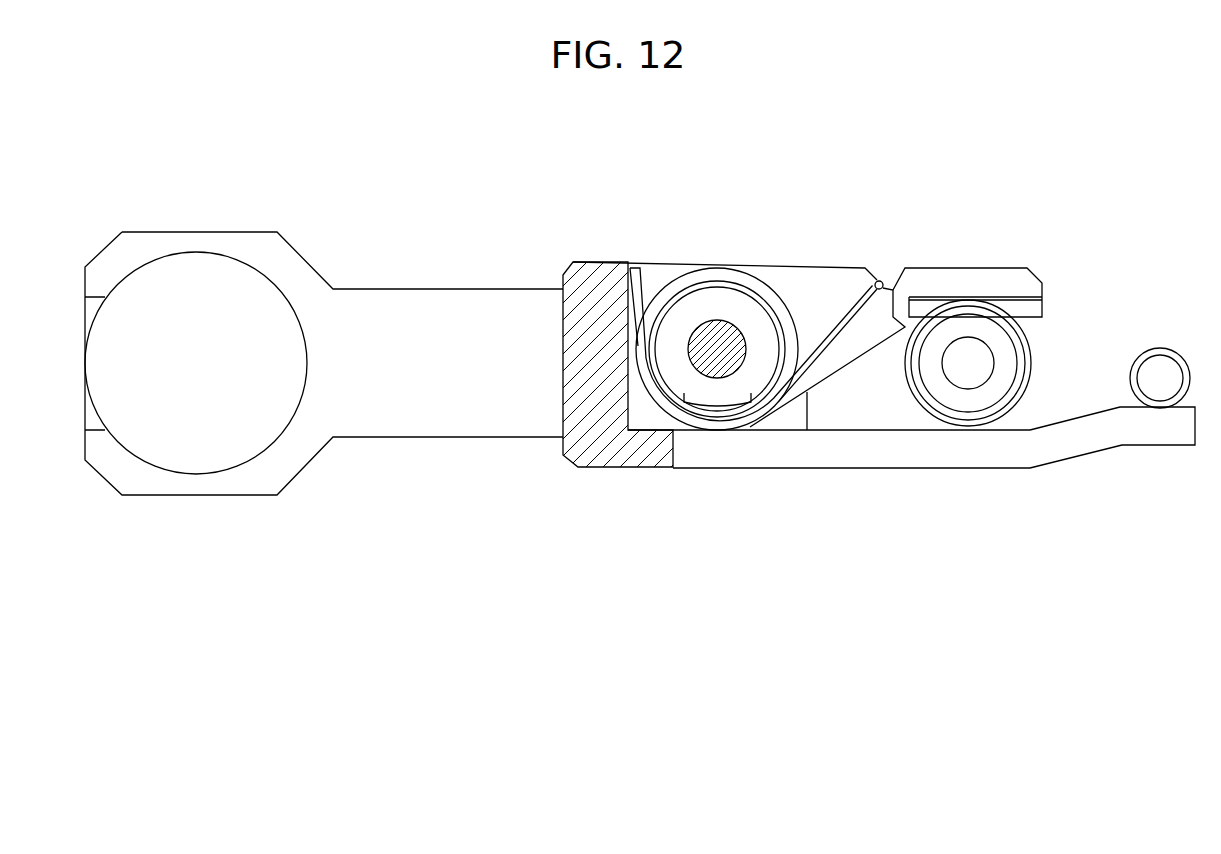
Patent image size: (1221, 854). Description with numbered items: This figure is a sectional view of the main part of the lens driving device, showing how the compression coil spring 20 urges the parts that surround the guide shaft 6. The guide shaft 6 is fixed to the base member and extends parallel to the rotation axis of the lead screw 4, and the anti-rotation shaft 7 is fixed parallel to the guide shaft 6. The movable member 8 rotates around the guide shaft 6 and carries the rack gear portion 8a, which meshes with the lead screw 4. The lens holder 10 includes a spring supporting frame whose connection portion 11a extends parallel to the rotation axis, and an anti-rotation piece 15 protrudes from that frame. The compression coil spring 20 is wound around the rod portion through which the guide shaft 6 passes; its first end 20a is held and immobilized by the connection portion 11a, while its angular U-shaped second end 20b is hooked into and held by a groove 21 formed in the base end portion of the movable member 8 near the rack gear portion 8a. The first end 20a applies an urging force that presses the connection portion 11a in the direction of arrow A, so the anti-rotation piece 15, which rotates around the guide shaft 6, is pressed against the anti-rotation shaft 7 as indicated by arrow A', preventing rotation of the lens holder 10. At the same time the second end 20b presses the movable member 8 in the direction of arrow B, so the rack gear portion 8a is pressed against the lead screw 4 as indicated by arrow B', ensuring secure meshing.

The lens holder 10 is at (465, 280).
The connection portion 11a is at (568, 385).
The movable member 8 is at (822, 268).
The groove 21 is at (903, 272).
The rack gear portion 8a is at (1023, 306).
The anti-rotation piece 15 is at (1140, 445).
The compression coil spring 20 is at (787, 303).
The first end 20a is at (645, 280).
The second end 20b is at (877, 279).
The guide shaft 6 is at (710, 378).
The lead screw 4 is at (1033, 363).
The anti-rotation shaft 7 is at (1163, 350).
The arrow A is at (582, 277).
The arrow A' is at (1166, 455).
The arrow B is at (853, 353).
The arrow B' is at (971, 255).